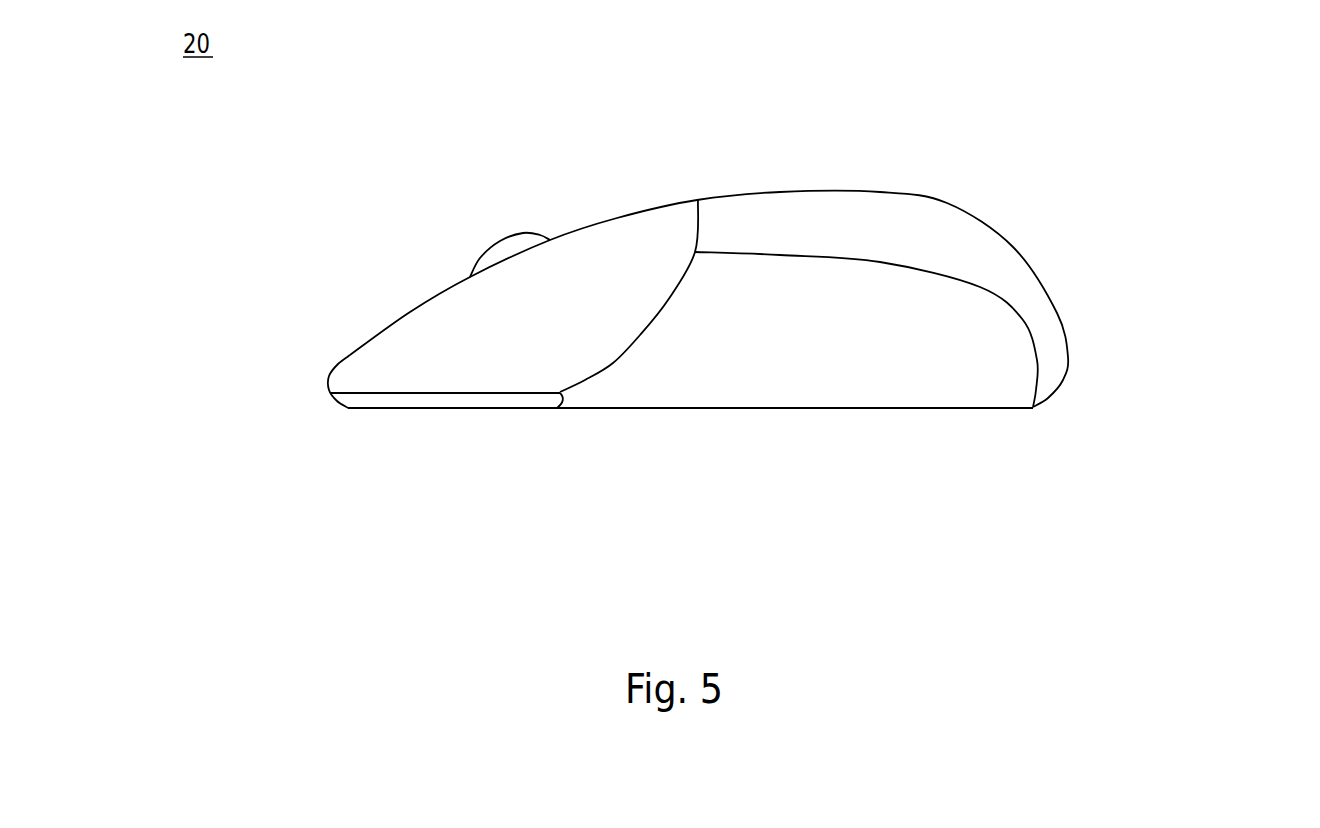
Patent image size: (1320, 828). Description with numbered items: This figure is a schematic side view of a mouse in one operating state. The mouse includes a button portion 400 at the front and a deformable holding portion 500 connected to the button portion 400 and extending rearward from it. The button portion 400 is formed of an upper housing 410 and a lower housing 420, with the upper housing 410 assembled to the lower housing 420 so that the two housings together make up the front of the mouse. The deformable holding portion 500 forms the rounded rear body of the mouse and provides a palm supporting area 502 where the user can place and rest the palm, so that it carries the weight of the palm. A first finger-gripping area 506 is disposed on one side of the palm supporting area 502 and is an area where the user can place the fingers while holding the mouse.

The button portion 400 is at (591, 385).
The upper housing 410 is at (360, 363).
The lower housing 420 is at (353, 400).
The deformable holding portion 500 is at (801, 327).
The palm supporting area 502 is at (1043, 328).
The first finger-gripping area 506 is at (830, 345).